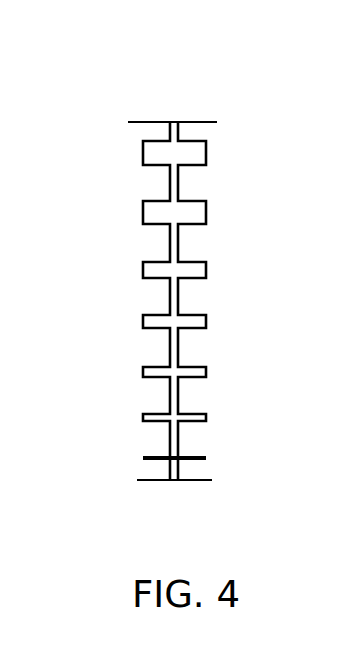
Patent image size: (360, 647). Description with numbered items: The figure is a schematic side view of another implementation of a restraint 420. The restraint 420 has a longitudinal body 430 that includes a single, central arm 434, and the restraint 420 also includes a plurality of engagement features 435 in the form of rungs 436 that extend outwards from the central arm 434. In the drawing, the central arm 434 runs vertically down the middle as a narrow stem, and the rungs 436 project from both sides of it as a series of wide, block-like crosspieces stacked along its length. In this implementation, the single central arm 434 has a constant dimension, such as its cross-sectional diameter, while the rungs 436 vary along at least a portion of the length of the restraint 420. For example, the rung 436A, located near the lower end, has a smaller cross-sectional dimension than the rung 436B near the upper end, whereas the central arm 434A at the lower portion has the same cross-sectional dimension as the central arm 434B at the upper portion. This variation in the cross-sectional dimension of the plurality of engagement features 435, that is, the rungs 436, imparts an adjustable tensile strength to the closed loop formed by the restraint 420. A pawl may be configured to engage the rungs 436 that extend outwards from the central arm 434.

The restraint 420 is at (80, 58).
The longitudinal body 430 is at (179, 249).
The central arm 434 is at (173, 297).
The central arm 434A is at (175, 433).
The central arm 434B is at (170, 176).
The engagement features 435 is at (160, 463).
The rungs 436 is at (158, 320).
The rung 436A is at (188, 418).
The rung 436B is at (181, 153).